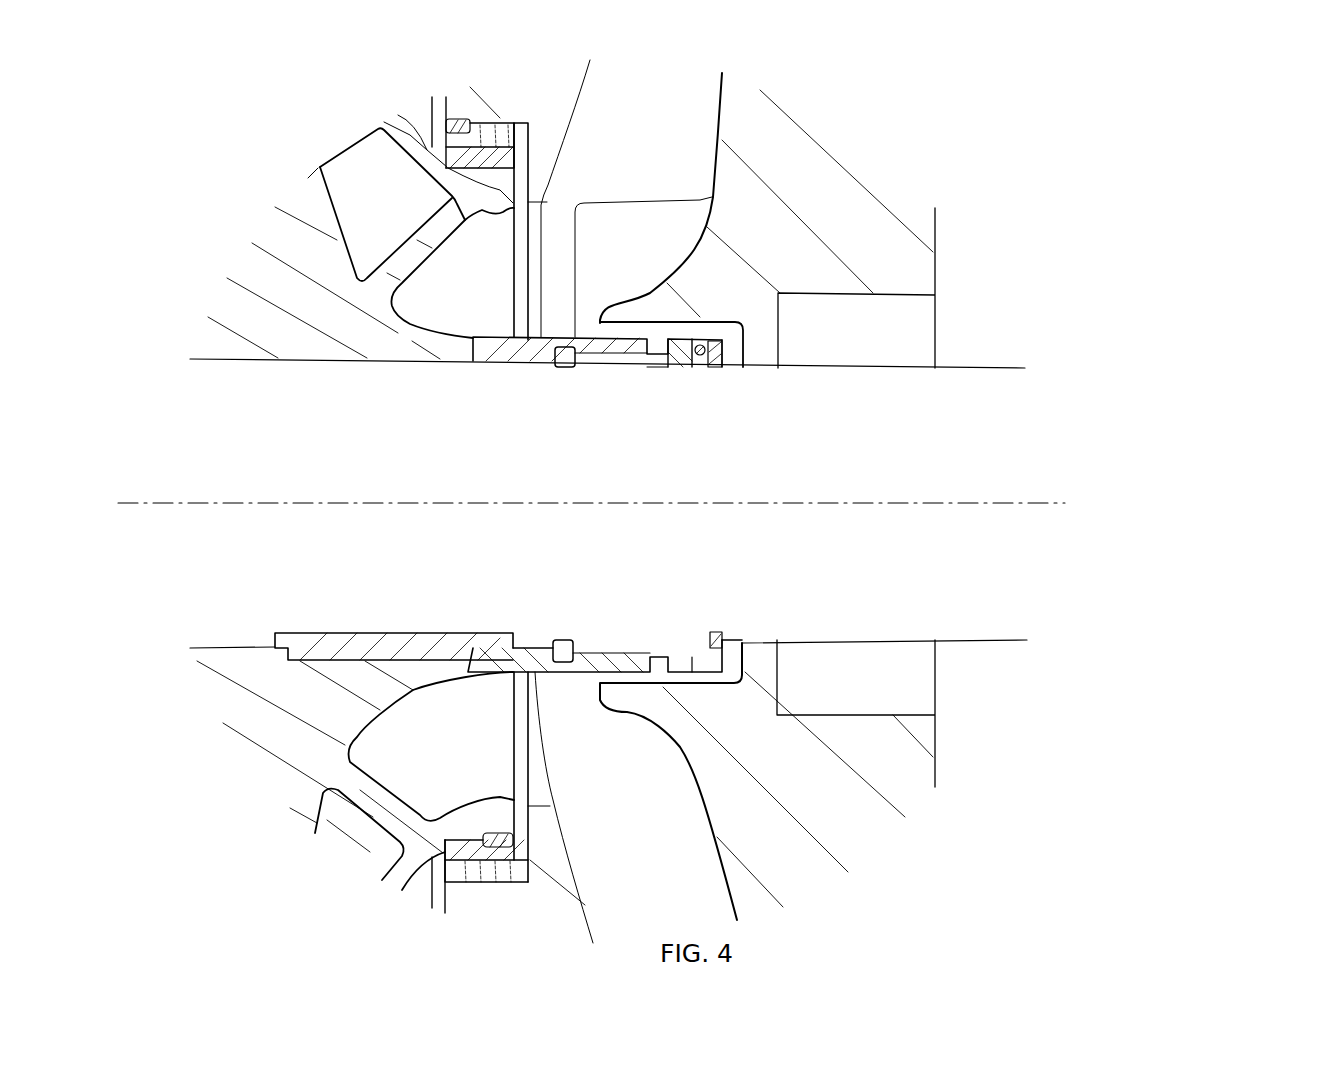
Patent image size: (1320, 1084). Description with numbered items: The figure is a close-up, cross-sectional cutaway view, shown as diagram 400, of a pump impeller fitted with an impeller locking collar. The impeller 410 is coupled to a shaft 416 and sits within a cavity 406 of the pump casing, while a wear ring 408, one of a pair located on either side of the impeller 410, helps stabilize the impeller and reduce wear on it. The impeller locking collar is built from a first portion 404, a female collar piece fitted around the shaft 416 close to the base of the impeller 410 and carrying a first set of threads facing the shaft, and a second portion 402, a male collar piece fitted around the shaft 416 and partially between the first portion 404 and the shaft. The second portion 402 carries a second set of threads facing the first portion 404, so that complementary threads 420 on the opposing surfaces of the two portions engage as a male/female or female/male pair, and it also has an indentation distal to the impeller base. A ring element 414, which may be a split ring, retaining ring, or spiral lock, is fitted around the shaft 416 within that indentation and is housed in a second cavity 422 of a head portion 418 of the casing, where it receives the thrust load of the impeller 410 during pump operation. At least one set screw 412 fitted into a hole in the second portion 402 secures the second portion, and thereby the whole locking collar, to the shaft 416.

The diagram 400 is at (1162, 100).
The second portion 402 is at (809, 245).
The first portion 404 is at (642, 468).
The cavity 406 is at (703, 107).
The wear ring 408 is at (500, 118).
The impeller 410 is at (403, 337).
The set screw 412 is at (750, 405).
The ring element 414 is at (757, 380).
The shaft 416 is at (634, 490).
The head portion 418 is at (898, 497).
The complementary threads 420 is at (627, 504).
The second cavity 422 is at (764, 631).